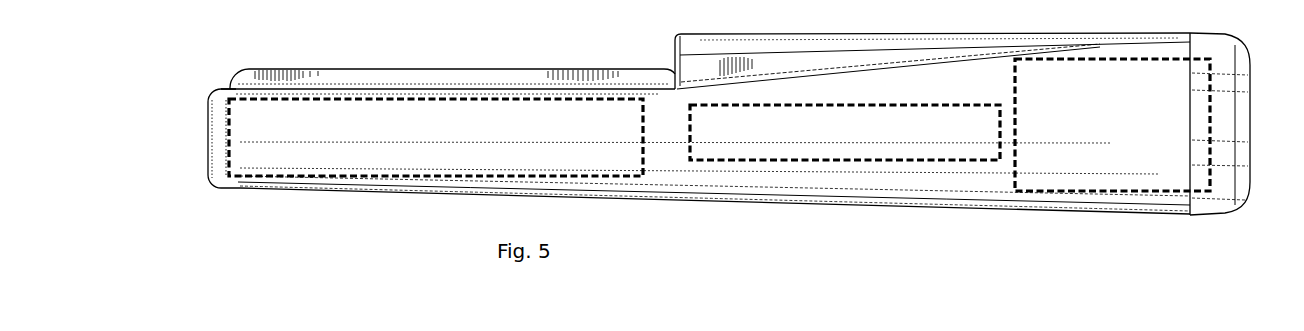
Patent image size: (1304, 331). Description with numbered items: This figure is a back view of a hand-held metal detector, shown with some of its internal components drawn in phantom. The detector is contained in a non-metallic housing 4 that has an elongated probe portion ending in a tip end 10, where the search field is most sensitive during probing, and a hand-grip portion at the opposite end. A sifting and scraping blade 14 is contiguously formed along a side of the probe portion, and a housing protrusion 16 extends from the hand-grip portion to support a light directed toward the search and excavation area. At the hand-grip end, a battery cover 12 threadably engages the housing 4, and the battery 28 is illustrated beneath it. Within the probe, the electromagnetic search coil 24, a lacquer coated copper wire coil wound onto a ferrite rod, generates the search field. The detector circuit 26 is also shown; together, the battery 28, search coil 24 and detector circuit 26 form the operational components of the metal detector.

The housing 4 is at (680, 199).
The tip end 10 is at (207, 147).
The battery cover 12 is at (1250, 110).
The sifting and scraping blade 14 is at (303, 68).
The housing protrusion 16 is at (680, 34).
The electromagnetic search coil 24 is at (542, 100).
The detector circuit 26 is at (773, 107).
The battery 28 is at (1047, 61).